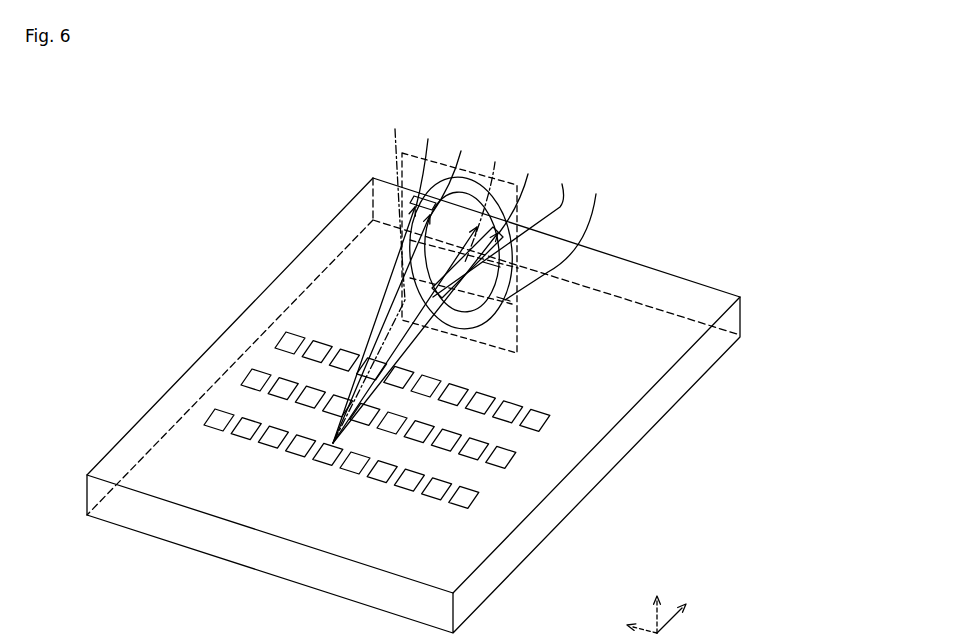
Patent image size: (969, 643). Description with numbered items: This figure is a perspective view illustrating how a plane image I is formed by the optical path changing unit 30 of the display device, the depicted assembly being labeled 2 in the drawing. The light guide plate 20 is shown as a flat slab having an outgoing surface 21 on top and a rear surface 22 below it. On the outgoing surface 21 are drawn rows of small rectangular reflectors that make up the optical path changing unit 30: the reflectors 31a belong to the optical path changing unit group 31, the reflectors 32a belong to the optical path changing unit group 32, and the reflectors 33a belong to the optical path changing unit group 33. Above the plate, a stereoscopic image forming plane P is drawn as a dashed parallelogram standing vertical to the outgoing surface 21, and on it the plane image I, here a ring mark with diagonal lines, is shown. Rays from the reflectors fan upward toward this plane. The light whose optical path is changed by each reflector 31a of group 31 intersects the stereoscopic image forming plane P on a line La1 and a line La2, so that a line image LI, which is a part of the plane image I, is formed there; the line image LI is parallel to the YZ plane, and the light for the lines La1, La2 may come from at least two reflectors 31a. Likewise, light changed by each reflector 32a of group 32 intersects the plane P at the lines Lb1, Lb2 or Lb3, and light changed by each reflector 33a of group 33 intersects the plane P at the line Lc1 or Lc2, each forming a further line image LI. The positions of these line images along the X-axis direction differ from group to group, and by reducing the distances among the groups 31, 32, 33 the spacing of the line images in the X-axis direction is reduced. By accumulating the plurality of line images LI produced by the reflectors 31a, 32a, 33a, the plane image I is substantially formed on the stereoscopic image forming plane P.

The optical sensor device 2 is at (157, 125).
The light guide plate 20 is at (142, 411).
The outgoing surface 21 is at (162, 462).
The rear surface 22 is at (163, 541).
The optical path changing unit 30 is at (660, 470).
The optical path changing unit group 31 is at (480, 504).
The optical path changing unit group 32 is at (517, 469).
The optical path changing unit group 33 is at (552, 433).
The reflector 31a is at (250, 415).
The reflector 32a is at (285, 380).
The reflector 33a is at (323, 340).
The plane image I is at (509, 312).
The stereoscopic image forming plane P is at (520, 346).
The line image LI is at (618, 185).
The line La1 is at (388, 281).
The line La2 is at (438, 299).
The line Lb1 is at (370, 276).
The line Lb2 is at (421, 293).
The line Lb3 is at (505, 231).
The line Lc1 is at (404, 287).
The line Lc2 is at (557, 237).